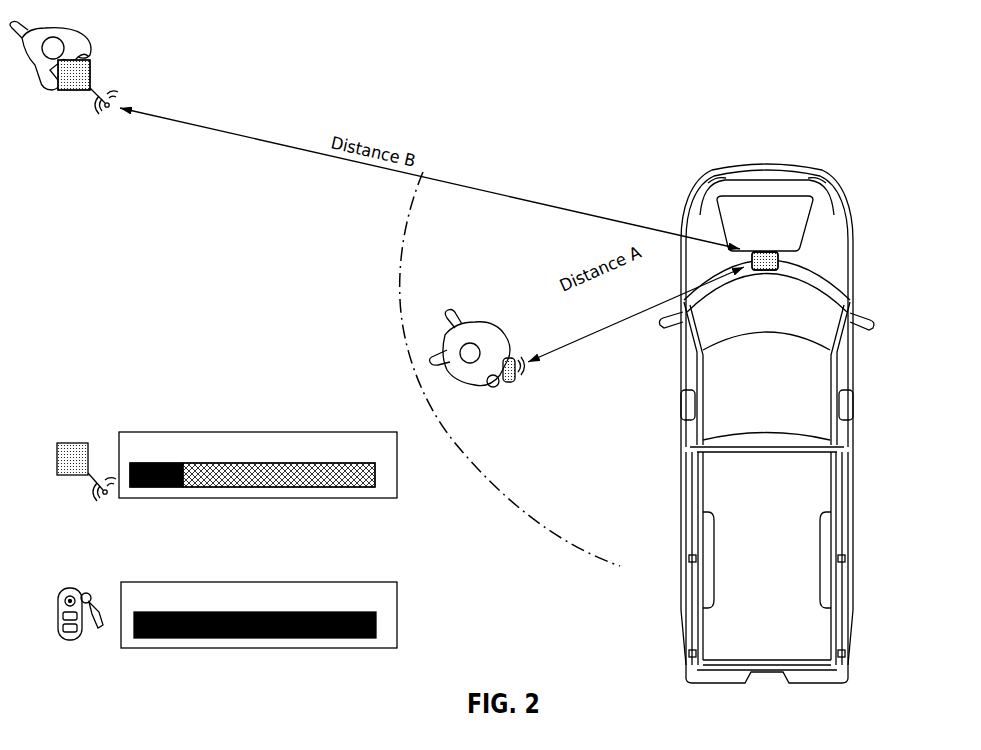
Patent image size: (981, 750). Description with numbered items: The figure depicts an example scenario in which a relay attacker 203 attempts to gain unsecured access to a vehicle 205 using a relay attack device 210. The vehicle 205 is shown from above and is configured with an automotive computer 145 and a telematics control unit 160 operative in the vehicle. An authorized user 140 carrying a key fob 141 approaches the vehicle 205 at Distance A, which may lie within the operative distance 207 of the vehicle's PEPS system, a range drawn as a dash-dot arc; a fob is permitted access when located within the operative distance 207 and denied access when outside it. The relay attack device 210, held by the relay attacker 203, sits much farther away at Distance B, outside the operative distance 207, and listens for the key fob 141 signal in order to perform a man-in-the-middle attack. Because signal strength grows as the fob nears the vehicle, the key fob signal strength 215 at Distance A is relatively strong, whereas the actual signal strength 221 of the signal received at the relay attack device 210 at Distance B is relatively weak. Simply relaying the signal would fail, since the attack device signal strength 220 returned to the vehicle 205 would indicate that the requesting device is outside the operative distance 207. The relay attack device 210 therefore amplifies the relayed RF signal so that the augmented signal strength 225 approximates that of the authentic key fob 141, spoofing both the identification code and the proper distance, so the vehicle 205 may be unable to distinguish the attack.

The relay attacker 203 is at (77, 33).
The relay attack device 210 is at (90, 77).
The operative distance 207 is at (413, 210).
The user 140 is at (478, 335).
The key fob 141 is at (513, 358).
The vehicle 205 is at (770, 167).
The telematics control unit 160 is at (768, 252).
The automotive computer 145 is at (779, 255).
The attack device signal strength 220 is at (249, 472).
The actual signal strength 221 is at (157, 487).
The augmented signal strength 225 is at (357, 487).
The key fob signal strength 215 is at (183, 582).